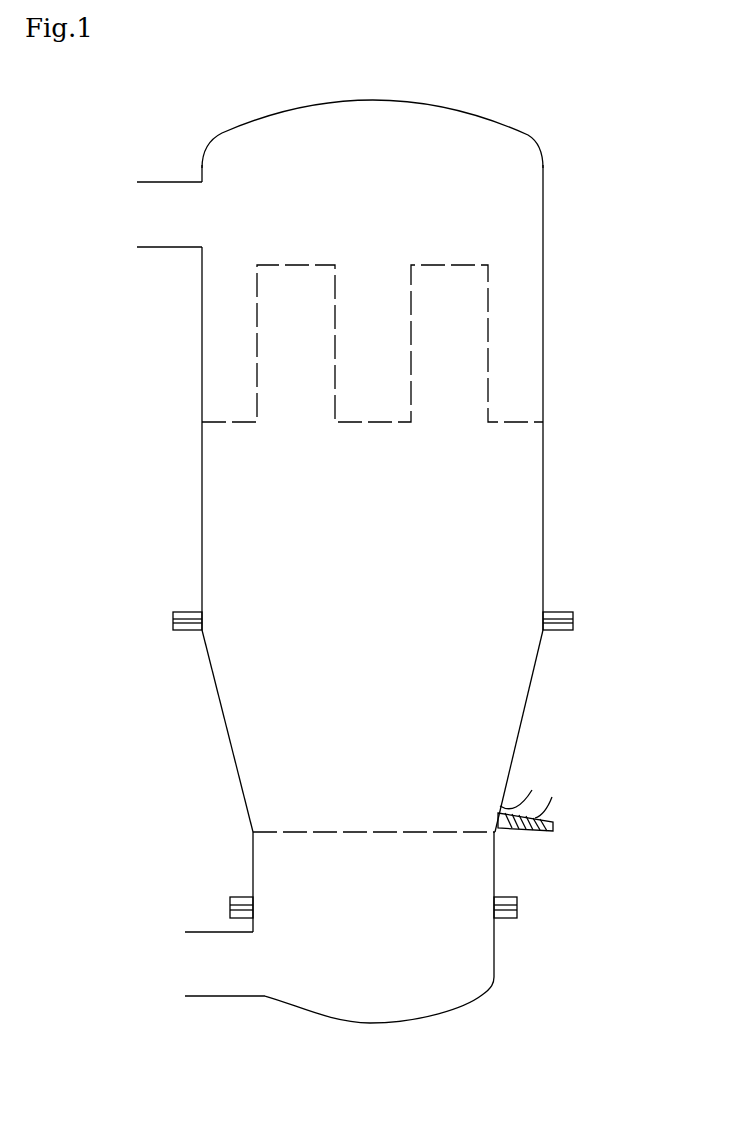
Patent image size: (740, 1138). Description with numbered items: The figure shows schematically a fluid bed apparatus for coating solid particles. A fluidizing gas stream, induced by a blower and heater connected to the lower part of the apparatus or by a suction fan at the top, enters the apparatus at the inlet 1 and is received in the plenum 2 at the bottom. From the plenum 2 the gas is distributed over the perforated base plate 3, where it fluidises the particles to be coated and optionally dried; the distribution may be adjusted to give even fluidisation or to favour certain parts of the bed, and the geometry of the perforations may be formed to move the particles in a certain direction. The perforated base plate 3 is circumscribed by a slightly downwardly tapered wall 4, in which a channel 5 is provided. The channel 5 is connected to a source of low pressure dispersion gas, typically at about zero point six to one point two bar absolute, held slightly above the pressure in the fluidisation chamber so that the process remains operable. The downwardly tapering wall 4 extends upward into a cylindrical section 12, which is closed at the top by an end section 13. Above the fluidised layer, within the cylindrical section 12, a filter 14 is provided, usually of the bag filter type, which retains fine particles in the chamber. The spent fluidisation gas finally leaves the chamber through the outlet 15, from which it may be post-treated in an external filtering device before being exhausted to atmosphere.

The inlet 1 is at (208, 980).
The plenum 2 is at (380, 992).
The perforated base plate 3 is at (252, 835).
The downwardly tapered wall 4 is at (522, 735).
The channel 5 is at (552, 810).
The cylindrical section 12 is at (543, 473).
The end section 13 is at (420, 98).
The filter 14 is at (438, 258).
The outlet 15 is at (185, 175).